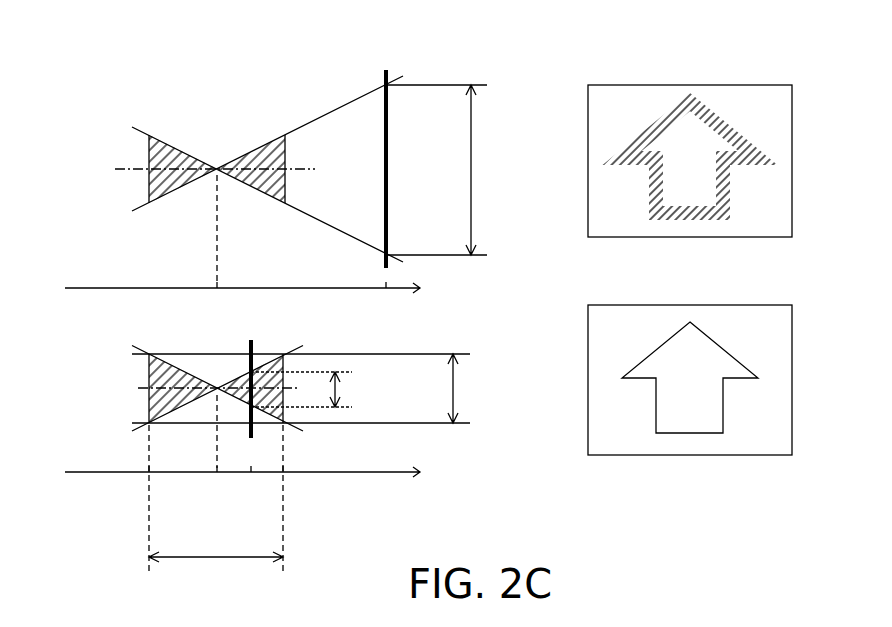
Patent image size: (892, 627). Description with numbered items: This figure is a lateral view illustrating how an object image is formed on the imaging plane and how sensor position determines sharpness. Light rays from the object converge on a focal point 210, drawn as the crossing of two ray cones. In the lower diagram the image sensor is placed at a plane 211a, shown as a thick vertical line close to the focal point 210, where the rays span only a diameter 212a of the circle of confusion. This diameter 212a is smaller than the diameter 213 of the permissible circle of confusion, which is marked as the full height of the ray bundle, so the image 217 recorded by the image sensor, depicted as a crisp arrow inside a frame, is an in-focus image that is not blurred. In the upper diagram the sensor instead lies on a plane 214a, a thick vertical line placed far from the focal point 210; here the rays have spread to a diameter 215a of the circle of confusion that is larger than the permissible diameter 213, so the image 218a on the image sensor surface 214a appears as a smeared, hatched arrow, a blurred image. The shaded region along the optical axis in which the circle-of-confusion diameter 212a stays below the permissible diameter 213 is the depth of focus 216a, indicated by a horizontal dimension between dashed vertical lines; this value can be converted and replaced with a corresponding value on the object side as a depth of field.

The focal point 210 is at (217, 380).
The plane 211a is at (253, 346).
The diameter of the circle of confusion 212a is at (337, 396).
The diameter of the permissible circle of confusion 213 is at (455, 388).
The plane 214a is at (386, 70).
The diameter of the circle of confusion 215a is at (471, 150).
The depth of focus 216a is at (212, 556).
The image 217 is at (715, 340).
The image 218a is at (717, 120).